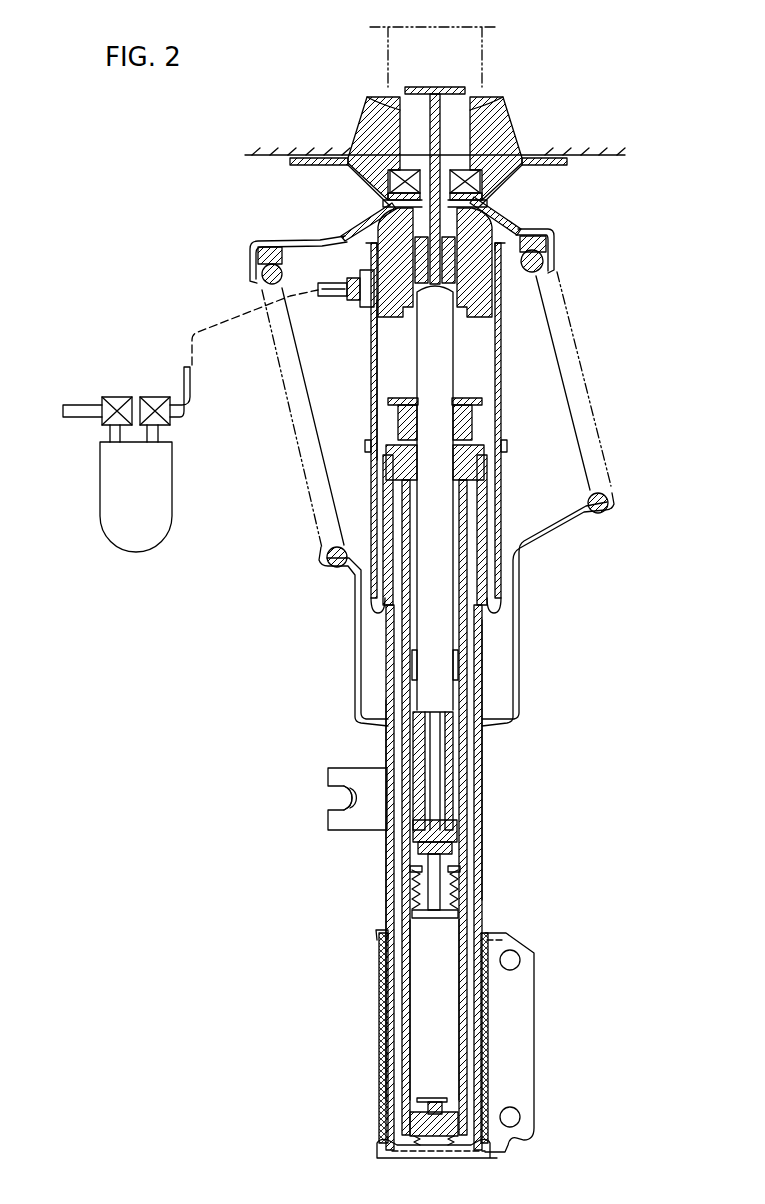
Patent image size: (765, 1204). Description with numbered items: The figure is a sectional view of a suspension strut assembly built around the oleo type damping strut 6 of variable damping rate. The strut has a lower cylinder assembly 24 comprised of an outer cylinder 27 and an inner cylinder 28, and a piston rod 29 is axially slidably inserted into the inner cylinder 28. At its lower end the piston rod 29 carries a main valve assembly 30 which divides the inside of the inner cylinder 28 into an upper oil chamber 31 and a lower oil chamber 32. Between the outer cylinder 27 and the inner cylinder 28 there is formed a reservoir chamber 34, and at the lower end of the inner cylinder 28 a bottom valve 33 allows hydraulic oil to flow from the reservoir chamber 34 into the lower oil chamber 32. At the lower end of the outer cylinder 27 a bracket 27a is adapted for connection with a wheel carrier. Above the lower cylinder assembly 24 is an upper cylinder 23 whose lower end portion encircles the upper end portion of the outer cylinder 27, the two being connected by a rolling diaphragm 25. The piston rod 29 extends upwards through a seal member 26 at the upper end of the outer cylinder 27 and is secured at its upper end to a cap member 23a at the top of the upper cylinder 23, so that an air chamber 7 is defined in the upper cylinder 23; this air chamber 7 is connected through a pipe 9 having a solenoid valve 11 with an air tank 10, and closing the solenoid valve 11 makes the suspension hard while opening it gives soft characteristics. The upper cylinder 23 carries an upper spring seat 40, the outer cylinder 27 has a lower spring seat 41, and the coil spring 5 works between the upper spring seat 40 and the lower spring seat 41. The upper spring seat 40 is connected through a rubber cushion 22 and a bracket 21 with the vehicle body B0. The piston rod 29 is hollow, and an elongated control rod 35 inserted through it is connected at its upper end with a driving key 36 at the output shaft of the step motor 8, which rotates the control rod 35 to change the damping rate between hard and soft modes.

The coil spring 5 is at (546, 288).
The damping strut 6 is at (380, 878).
The air chamber 7 is at (388, 380).
The step motor 8 is at (437, 33).
The pipe 9 is at (196, 404).
The air tank 10 is at (172, 495).
The solenoid valve 11 is at (153, 397).
The bracket 21 is at (533, 158).
The rubber cushion 22 is at (497, 118).
The upper cylinder 23 is at (372, 343).
The cap member 23a is at (386, 213).
The lower cylinder assembly 24 is at (486, 762).
The rolling diaphragm 25 is at (503, 492).
The seal member 26 is at (470, 425).
The outer cylinder 27 is at (483, 812).
The bracket 27a is at (527, 1058).
The inner cylinder 28 is at (468, 784).
The piston rod 29 is at (440, 632).
The main valve assembly 30 is at (460, 908).
The upper oil chamber 31 is at (457, 833).
The lower oil chamber 32 is at (423, 972).
The bottom valve 33 is at (432, 1091).
The reservoir chamber 34 is at (396, 1006).
The control rod 35 is at (436, 756).
The driving key 36 is at (457, 86).
The upper spring seat 40 is at (527, 235).
The lower spring seat 41 is at (537, 547).
The vehicle body B0 is at (613, 157).